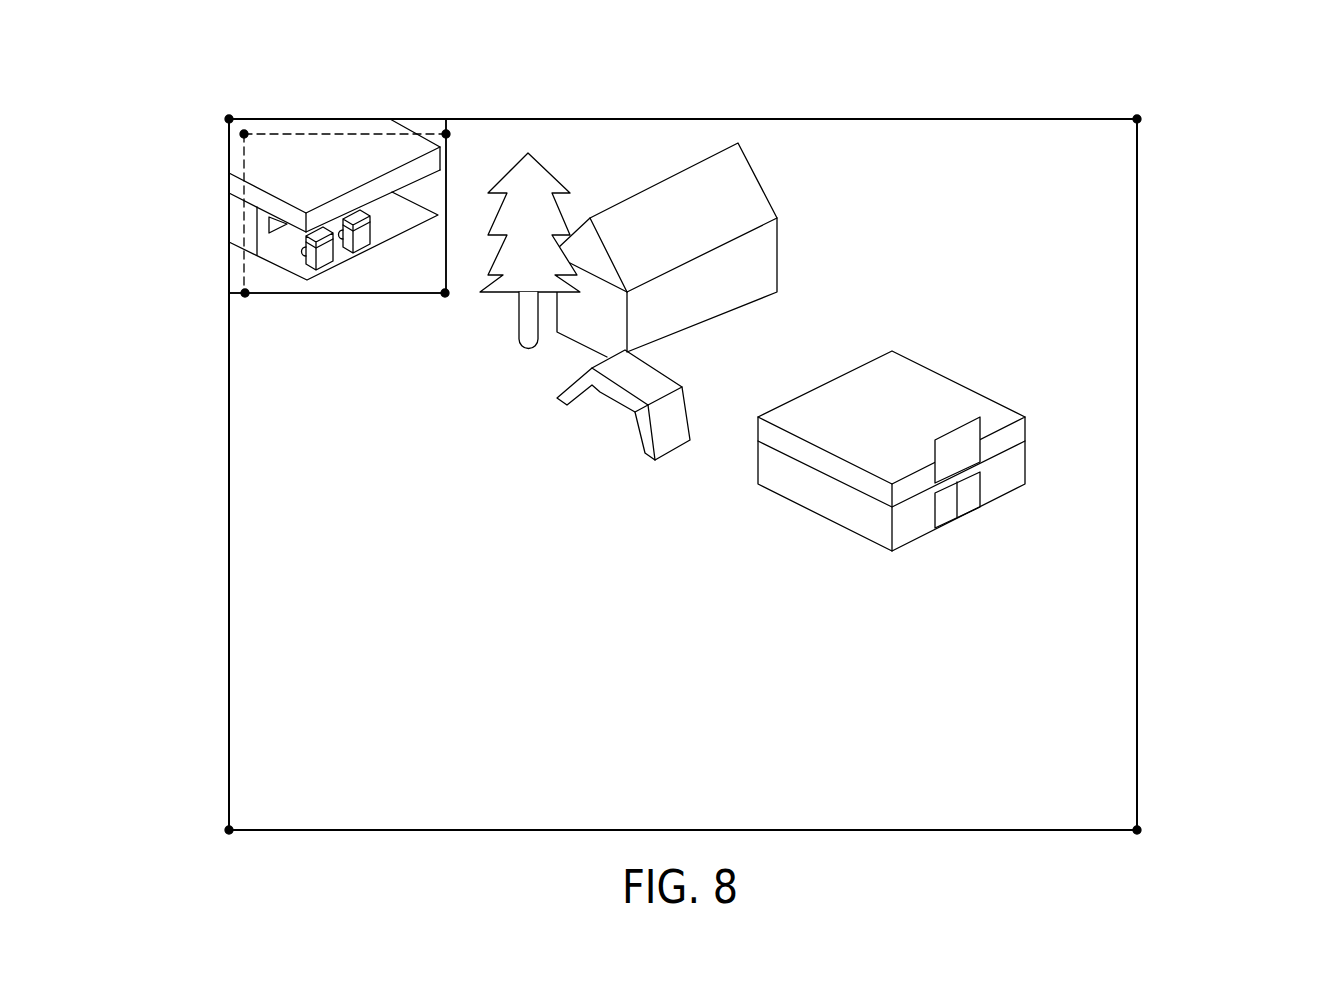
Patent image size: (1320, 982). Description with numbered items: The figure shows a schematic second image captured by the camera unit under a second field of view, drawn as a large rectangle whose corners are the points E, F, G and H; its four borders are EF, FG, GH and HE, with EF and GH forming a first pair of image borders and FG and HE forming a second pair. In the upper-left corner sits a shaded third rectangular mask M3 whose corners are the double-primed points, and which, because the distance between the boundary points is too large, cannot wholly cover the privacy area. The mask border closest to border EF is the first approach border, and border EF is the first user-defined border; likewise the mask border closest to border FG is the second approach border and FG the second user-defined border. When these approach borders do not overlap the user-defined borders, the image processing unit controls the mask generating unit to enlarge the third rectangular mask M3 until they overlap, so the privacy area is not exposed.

The third rectangular mask M3 is at (337, 293).
The image corner point E is at (1137, 119).
The image corner point F is at (229, 119).
The image corner point G is at (229, 830).
The image corner point H is at (1137, 830).